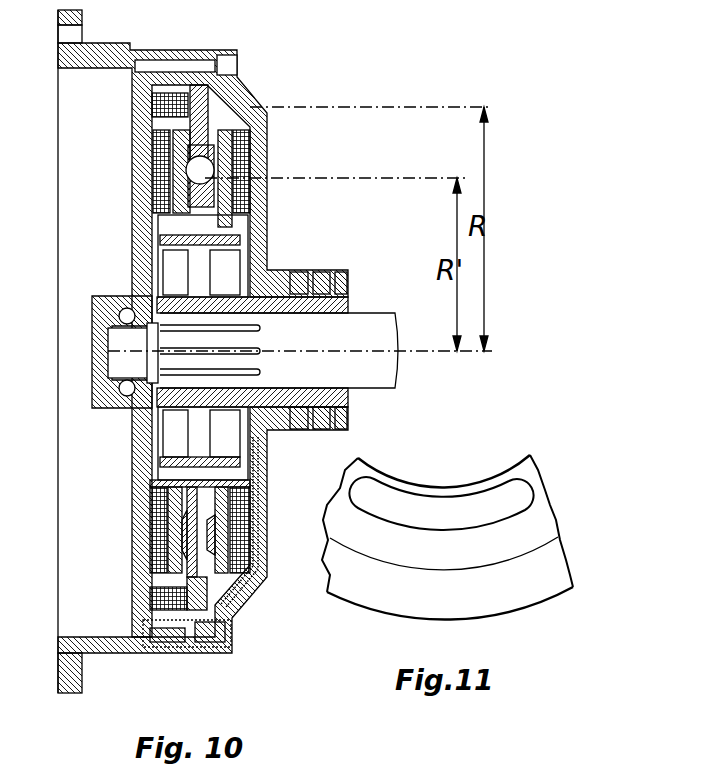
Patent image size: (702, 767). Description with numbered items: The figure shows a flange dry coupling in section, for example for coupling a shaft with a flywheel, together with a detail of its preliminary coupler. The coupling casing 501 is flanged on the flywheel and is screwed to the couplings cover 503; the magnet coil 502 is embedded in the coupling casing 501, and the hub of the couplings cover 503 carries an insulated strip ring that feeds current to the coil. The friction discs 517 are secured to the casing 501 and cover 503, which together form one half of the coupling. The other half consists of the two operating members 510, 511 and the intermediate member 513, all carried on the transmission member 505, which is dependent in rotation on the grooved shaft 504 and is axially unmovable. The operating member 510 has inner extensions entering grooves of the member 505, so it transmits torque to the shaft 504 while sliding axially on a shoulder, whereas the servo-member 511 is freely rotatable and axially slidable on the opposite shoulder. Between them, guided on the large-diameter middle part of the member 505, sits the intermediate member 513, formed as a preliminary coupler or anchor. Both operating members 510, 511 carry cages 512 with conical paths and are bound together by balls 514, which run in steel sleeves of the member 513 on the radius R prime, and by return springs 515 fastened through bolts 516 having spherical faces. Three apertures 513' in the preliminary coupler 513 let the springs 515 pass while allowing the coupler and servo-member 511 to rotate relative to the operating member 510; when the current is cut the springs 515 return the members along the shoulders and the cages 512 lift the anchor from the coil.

In FIG. 10, the coupling casing 501 is at (105, 50).
In FIG. 10, the magnet coil 502 is at (150, 106).
In FIG. 10, the couplings cover 503 is at (193, 55).
In FIG. 10, the grooved shaft 504 is at (397, 331).
In FIG. 10, the transmission member 505 is at (187, 262).
In FIG. 10, the operating member 510 is at (256, 146).
In FIG. 10, the servo-member 511 is at (152, 137).
In FIG. 10, the cage 512 is at (196, 196).
In FIG. 10, the intermediate member 513 is at (217, 626).
In FIG. 11, the intermediate member 513 is at (465, 537).
In FIG. 10, the aperture 513' is at (273, 522).
In FIG. 11, the aperture 513' is at (441, 491).
In FIG. 10, the ball 514 is at (186, 171).
In FIG. 10, the return spring 515 is at (190, 487).
In FIG. 10, the bolt 516 is at (150, 520).
In FIG. 10, the friction disc 517 is at (182, 553).